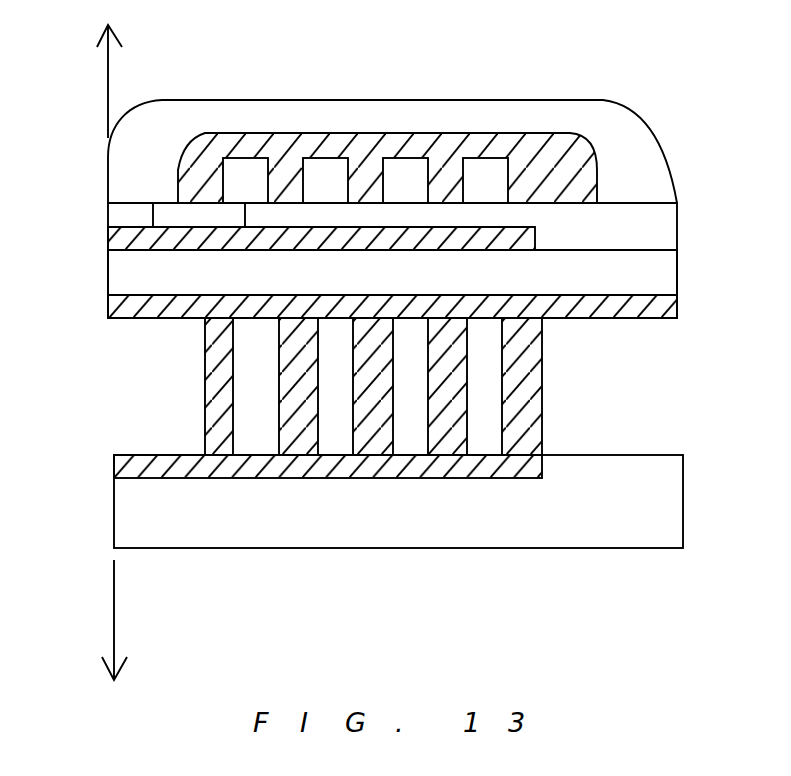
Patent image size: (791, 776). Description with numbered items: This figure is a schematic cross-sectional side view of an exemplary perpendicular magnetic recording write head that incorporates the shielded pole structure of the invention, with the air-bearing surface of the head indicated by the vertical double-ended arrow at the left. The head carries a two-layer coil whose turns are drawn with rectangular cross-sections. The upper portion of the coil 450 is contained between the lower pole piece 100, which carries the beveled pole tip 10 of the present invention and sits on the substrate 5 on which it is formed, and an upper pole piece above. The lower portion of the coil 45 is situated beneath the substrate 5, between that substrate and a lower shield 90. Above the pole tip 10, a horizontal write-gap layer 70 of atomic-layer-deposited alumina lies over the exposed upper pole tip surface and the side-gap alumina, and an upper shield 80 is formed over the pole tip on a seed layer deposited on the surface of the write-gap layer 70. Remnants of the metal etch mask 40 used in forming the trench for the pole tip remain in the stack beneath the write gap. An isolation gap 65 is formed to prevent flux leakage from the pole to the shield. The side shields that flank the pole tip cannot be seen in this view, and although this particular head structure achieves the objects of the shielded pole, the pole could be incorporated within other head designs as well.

The substrate 5 is at (667, 305).
The pole tip 10 is at (107, 272).
The metal etch mask 40 is at (127, 215).
The lower portion of the coil 45 is at (485, 380).
The isolation gap 65 is at (177, 215).
The write-gap layer 70 is at (120, 243).
The upper shield 80 is at (620, 152).
The lower shield 90 is at (672, 507).
The lower pole piece 100 is at (660, 267).
The upper portion of the coil 450 is at (485, 173).